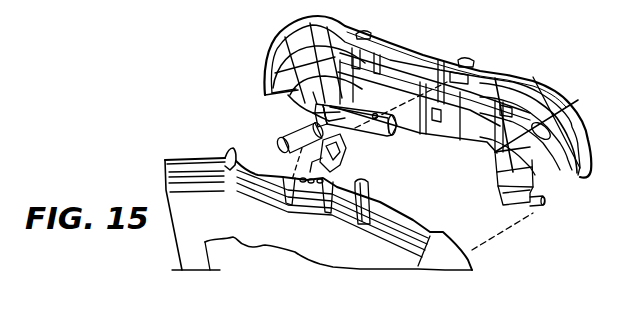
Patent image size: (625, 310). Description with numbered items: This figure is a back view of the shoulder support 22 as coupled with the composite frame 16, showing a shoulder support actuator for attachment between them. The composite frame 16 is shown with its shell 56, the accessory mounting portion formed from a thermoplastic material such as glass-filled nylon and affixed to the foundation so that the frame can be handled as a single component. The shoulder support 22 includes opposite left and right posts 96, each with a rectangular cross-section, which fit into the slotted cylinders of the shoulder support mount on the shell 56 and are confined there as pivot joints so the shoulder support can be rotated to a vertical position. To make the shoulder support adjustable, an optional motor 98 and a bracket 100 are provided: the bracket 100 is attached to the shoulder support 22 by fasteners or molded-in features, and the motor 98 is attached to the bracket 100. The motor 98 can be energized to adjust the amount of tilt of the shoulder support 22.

The shoulder support 22 is at (420, 55).
The composite frame 16 is at (183, 180).
The shell 56 is at (310, 237).
The motor 98 is at (284, 135).
The bracket 100 is at (380, 130).
The posts 96 is at (546, 203).